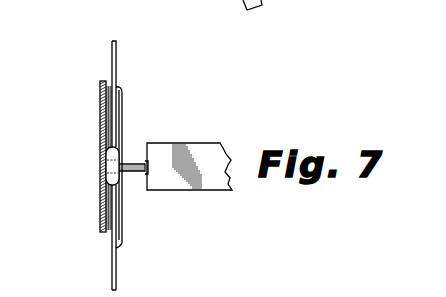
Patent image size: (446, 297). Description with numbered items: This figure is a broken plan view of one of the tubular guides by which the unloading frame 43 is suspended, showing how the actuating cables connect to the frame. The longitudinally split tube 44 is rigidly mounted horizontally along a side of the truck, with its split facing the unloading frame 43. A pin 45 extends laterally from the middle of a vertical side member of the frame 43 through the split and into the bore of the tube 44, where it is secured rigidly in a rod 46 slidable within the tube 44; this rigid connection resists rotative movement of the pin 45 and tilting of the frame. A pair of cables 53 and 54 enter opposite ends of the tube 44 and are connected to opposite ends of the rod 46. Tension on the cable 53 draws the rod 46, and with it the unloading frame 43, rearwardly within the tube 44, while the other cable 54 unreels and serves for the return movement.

The unloading frame 43 is at (199, 152).
The longitudinally split tube 44 is at (100, 111).
The pin 45 is at (127, 162).
The rod 46 is at (106, 179).
The cable 53 is at (117, 68).
The cable 54 is at (117, 271).